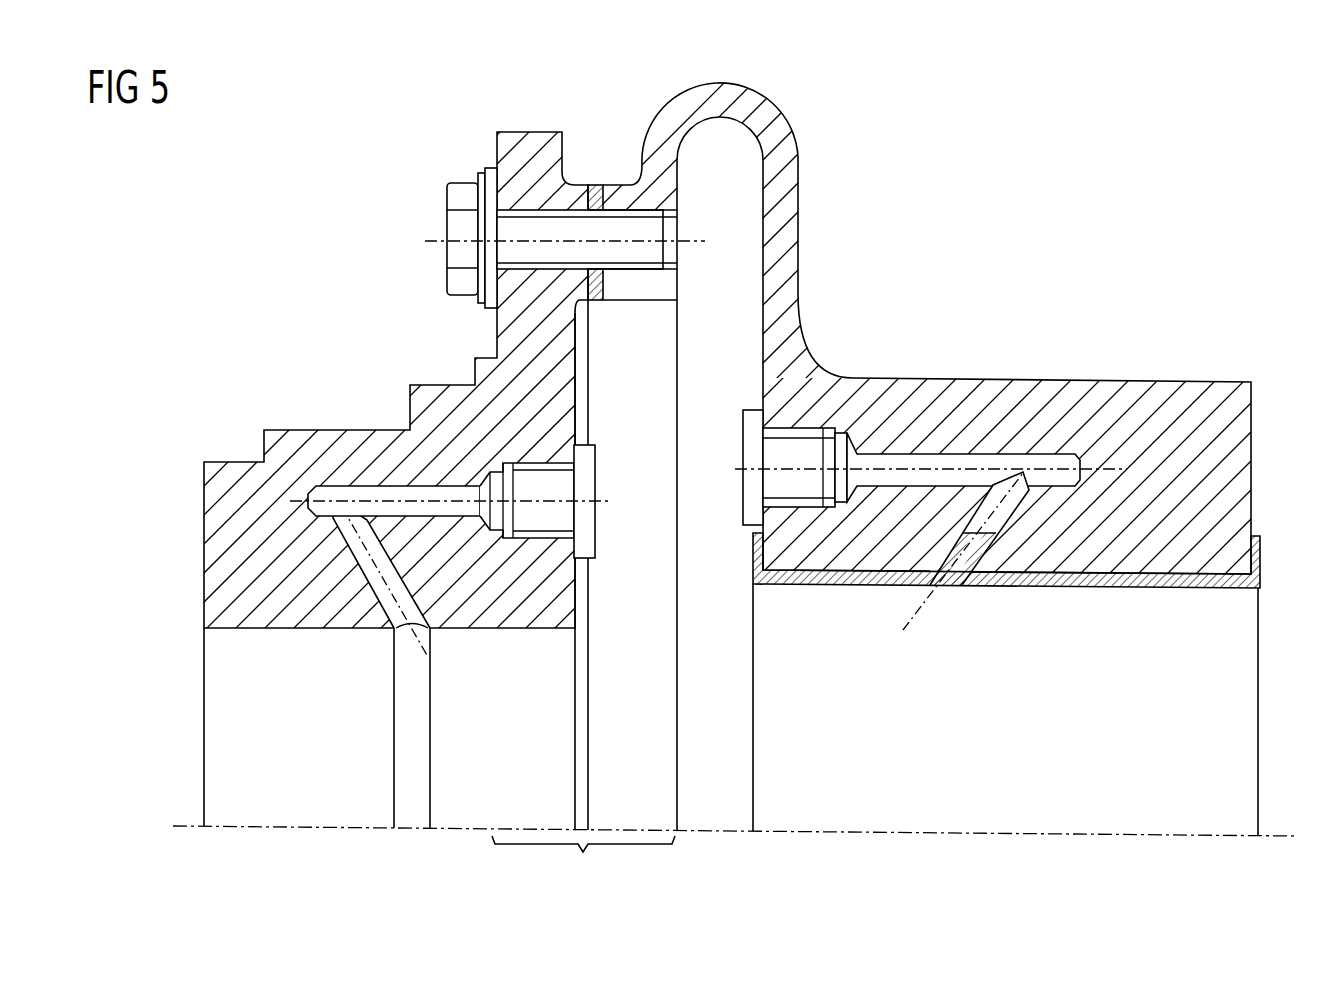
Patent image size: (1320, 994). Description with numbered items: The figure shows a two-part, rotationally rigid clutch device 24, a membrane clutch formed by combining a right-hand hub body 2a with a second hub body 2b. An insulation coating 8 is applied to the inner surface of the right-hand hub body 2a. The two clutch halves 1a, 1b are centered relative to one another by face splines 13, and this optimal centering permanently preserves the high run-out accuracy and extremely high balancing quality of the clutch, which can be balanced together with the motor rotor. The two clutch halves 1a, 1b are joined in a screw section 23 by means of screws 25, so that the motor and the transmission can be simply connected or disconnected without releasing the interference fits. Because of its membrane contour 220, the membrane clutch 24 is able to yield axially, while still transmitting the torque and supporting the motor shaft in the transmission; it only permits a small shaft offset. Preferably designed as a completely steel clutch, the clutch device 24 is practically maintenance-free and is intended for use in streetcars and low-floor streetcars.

The clutch half 1a is at (1282, 418).
The clutch half 1b is at (172, 490).
The hub body 2a is at (982, 378).
The hub body 2b is at (345, 443).
The insulation coating 8 is at (1260, 556).
The face splines 13 is at (593, 185).
The screw section 23 is at (583, 860).
The clutch device 24 is at (810, 100).
The screws 25 is at (458, 231).
The membrane contour 220 is at (590, 485).